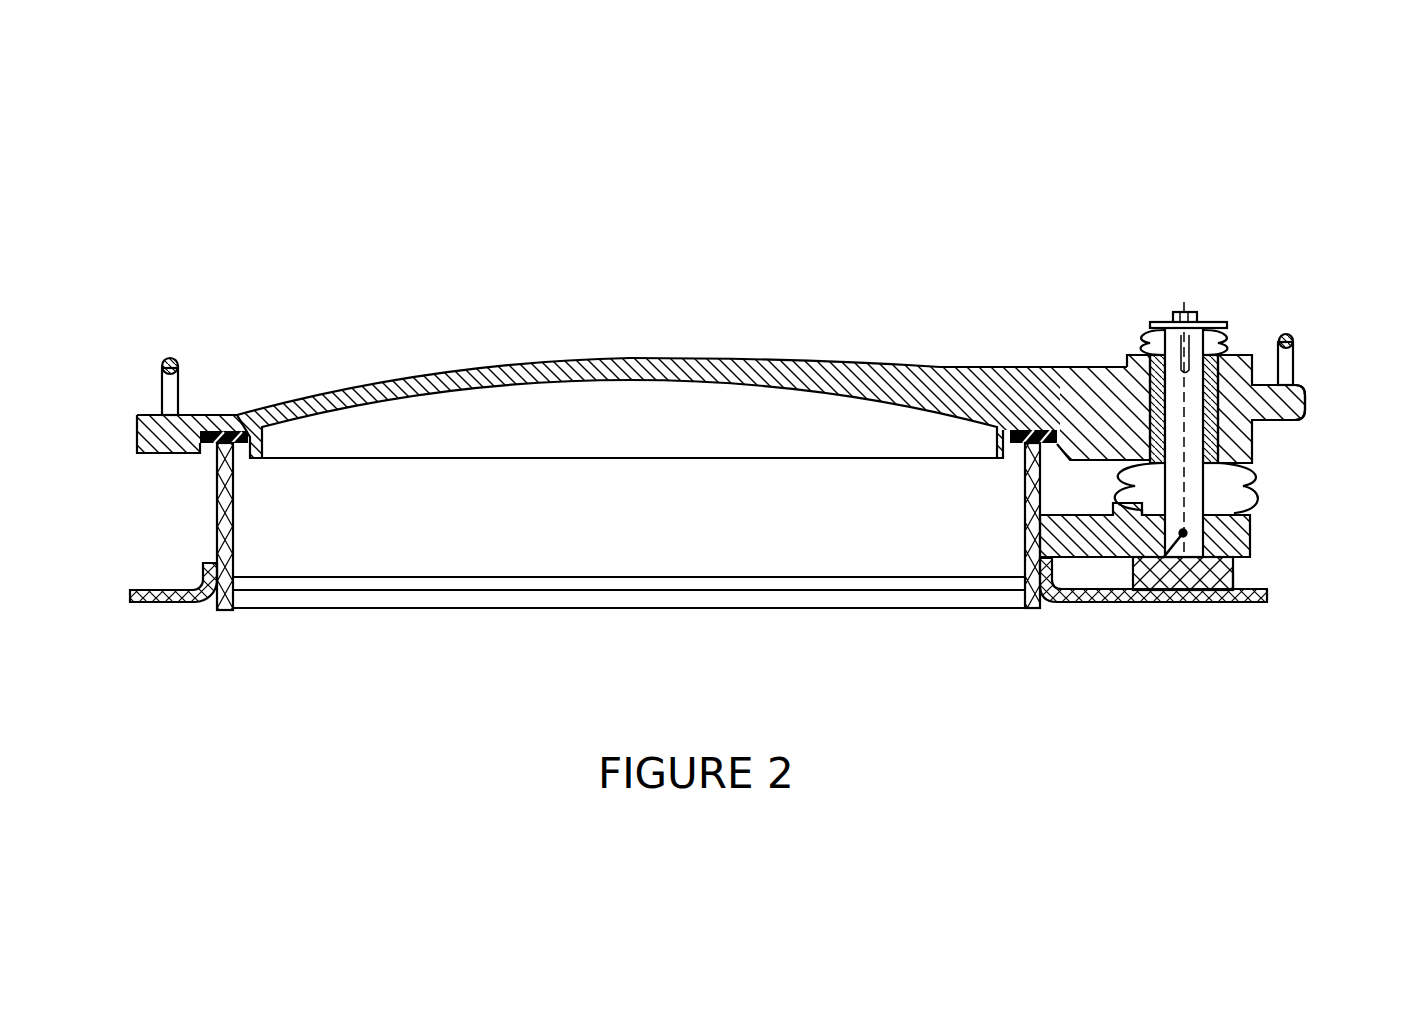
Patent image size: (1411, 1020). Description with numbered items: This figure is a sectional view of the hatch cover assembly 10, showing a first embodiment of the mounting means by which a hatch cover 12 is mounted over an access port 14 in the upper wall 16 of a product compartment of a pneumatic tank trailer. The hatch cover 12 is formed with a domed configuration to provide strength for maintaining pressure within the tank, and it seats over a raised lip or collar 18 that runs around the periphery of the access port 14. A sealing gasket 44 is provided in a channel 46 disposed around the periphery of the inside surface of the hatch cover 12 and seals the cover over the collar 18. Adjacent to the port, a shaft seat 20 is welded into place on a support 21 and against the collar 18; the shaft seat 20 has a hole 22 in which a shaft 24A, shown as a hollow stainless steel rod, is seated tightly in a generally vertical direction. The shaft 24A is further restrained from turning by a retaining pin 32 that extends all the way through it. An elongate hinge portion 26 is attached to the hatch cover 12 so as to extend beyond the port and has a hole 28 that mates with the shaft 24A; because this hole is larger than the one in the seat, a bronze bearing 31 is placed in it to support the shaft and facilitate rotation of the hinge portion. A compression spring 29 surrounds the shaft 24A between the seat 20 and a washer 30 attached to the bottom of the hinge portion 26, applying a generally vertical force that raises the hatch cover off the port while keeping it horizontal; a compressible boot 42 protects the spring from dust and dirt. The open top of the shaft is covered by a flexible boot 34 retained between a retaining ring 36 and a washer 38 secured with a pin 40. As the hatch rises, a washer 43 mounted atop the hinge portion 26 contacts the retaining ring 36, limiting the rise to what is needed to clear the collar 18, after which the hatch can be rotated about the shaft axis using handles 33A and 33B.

The hatch cover assembly 10 is at (757, 118).
The hatch cover 12 is at (633, 357).
The access port 14 is at (148, 545).
The upper wall 16 is at (153, 595).
The raised lip or collar 18 is at (233, 537).
The shaft seat 20 is at (1250, 543).
The support 21 is at (1240, 572).
The hole 22 is at (1105, 590).
The shaft 24A is at (1252, 515).
The elongate hinge portion 26 is at (943, 367).
The hole 28 is at (1113, 366).
The compression spring 29 is at (1255, 481).
The washer 30 is at (1255, 466).
The bearing 31 is at (1273, 386).
The retaining pin 32 is at (1153, 560).
The handle 33A is at (1293, 332).
The handle 33B is at (157, 367).
The boot 34 is at (1235, 355).
The retaining ring 36 is at (1214, 322).
The washer 38 is at (1145, 328).
The pin 40 is at (1182, 316).
The boot 42 is at (1150, 525).
The washer 43 is at (1128, 368).
The sealing gasket 44 is at (217, 445).
The channel 46 is at (213, 403).